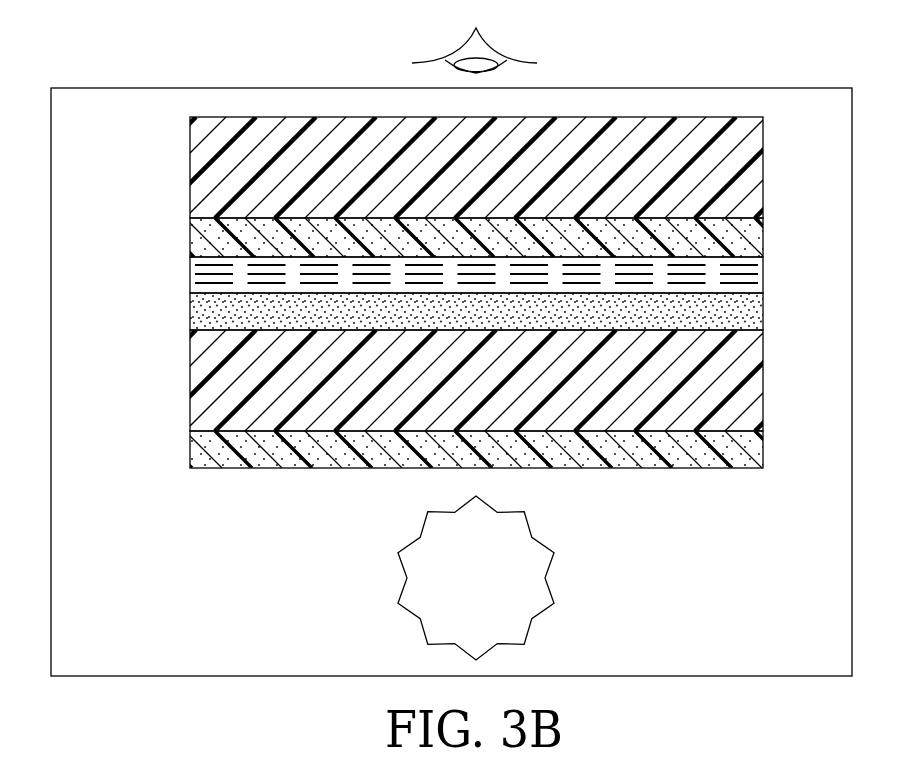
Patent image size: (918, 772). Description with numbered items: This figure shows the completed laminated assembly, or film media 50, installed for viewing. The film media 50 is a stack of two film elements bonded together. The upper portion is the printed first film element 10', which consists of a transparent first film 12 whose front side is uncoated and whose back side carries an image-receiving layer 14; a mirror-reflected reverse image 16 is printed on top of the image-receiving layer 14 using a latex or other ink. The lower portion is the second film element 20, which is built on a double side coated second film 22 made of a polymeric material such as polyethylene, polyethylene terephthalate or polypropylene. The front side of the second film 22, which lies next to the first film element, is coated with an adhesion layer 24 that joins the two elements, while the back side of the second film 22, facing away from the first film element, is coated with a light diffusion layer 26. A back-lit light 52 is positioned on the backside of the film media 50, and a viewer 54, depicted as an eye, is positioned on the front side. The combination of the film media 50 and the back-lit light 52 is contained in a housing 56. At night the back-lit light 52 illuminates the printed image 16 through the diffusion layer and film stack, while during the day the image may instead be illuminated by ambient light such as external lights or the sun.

The housing 56 is at (783, 88).
The film media 50 is at (136, 136).
The printed first film element 10' is at (148, 205).
The second film element 20 is at (182, 293).
The first film 12 is at (750, 148).
The image-receiving layer 14 is at (750, 238).
The mirror-reflected reverse image 16 is at (748, 279).
The adhesion layer 24 is at (748, 312).
The second film 22 is at (748, 396).
The light diffusion layer 26 is at (750, 452).
The viewer 54 is at (463, 52).
The back-lit light 52 is at (412, 552).